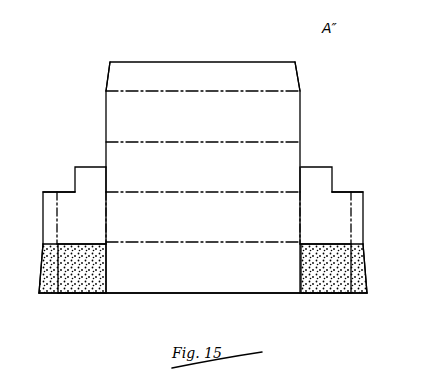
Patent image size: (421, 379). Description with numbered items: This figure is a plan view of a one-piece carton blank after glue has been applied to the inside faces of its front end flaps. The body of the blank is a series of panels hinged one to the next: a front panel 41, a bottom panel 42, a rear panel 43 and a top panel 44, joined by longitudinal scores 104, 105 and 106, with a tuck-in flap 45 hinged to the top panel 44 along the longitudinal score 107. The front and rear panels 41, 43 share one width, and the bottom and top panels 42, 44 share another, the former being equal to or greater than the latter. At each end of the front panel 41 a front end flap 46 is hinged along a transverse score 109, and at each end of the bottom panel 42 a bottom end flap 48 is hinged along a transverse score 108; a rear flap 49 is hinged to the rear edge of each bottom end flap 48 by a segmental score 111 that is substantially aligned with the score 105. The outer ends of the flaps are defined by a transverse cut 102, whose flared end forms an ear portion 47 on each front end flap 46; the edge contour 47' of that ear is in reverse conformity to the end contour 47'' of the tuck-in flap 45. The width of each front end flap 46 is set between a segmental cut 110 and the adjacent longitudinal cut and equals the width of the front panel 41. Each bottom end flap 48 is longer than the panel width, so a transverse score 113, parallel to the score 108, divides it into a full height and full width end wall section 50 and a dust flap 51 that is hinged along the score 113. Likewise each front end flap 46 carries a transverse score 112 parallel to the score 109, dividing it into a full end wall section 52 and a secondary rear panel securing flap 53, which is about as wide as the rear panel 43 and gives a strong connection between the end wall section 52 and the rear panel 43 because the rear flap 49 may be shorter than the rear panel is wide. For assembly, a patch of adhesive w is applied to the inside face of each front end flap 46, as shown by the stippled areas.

The front panel 41 is at (205, 276).
The bottom panel 42 is at (205, 225).
The rear panel 43 is at (205, 173).
The top panel 44 is at (198, 125).
The tuck-in flap 45 is at (198, 84).
The front end flap 46 is at (85, 298).
The ear portion 47 is at (206, 198).
The edge contour 47' is at (200, 268).
The end contour 47'' is at (204, 64).
The bottom end flap 48 is at (64, 191).
The rear flap 49 is at (90, 175).
The end wall section 50 is at (86, 222).
The dust flap 51 is at (43, 201).
The end wall section 52 is at (88, 270).
The secondary rear panel securing flap 53 is at (50, 255).
The transverse cut 102 is at (107, 178).
The longitudinal score 104 is at (243, 242).
The longitudinal score 105 is at (243, 192).
The longitudinal score 106 is at (240, 142).
The longitudinal score 107 is at (237, 91).
The transverse score 108 is at (107, 216).
The transverse score 109 is at (107, 259).
The segmental cut 110 is at (95, 241).
The segmental score 111 is at (108, 202).
The transverse score 112 is at (66, 295).
The transverse score 113 is at (57, 216).
The patch of adhesive w is at (97, 285).